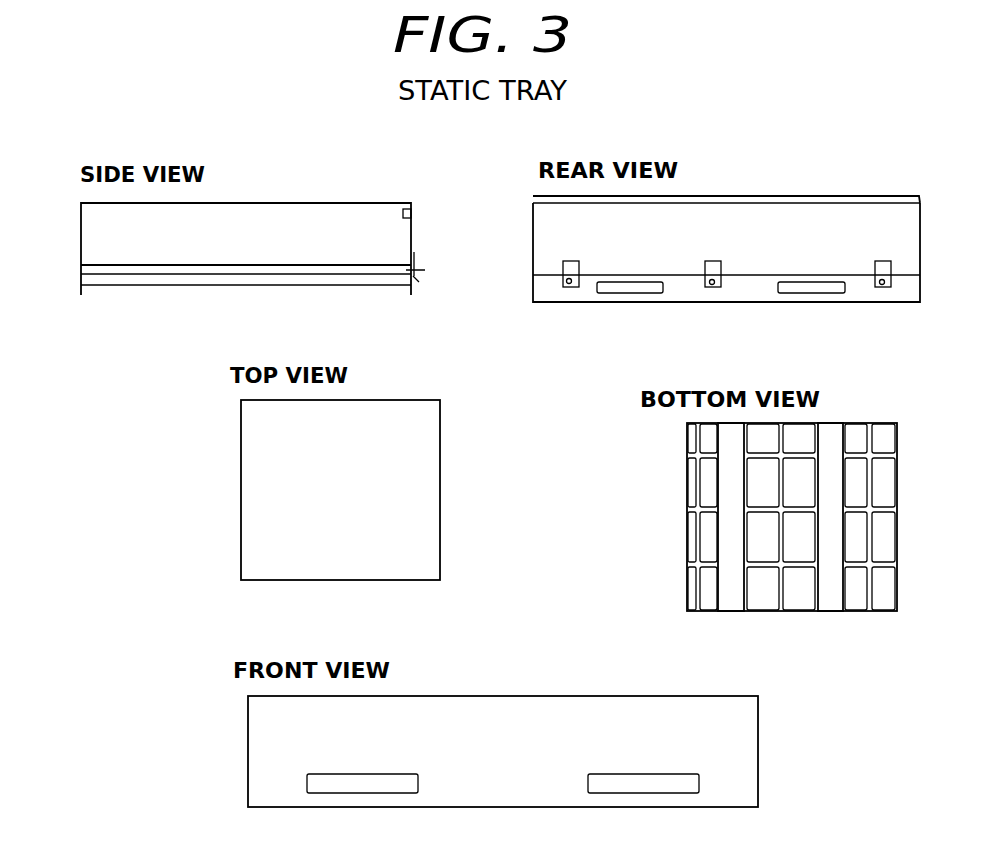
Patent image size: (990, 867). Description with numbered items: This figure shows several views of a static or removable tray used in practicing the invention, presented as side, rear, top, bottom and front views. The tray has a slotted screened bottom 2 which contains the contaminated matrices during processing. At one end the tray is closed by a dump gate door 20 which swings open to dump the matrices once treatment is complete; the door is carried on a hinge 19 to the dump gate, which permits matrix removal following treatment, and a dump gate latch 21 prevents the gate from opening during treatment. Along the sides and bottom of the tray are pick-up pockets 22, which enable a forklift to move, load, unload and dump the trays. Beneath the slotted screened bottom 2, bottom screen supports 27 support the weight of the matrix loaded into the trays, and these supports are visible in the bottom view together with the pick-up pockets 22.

The slotted screened bottom of tray 2 is at (243, 270).
The hinge 19 is at (412, 208).
The dump gate door 20 is at (413, 232).
The dump gate latch 21 is at (419, 258).
The pick-up pocket 22 is at (82, 276).
The bottom screen support 27 is at (695, 485).